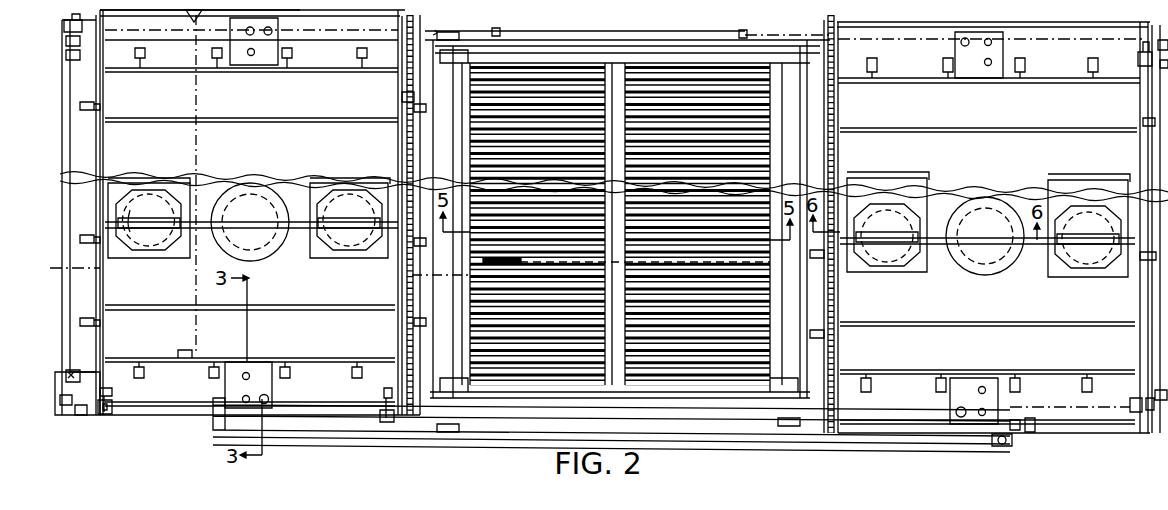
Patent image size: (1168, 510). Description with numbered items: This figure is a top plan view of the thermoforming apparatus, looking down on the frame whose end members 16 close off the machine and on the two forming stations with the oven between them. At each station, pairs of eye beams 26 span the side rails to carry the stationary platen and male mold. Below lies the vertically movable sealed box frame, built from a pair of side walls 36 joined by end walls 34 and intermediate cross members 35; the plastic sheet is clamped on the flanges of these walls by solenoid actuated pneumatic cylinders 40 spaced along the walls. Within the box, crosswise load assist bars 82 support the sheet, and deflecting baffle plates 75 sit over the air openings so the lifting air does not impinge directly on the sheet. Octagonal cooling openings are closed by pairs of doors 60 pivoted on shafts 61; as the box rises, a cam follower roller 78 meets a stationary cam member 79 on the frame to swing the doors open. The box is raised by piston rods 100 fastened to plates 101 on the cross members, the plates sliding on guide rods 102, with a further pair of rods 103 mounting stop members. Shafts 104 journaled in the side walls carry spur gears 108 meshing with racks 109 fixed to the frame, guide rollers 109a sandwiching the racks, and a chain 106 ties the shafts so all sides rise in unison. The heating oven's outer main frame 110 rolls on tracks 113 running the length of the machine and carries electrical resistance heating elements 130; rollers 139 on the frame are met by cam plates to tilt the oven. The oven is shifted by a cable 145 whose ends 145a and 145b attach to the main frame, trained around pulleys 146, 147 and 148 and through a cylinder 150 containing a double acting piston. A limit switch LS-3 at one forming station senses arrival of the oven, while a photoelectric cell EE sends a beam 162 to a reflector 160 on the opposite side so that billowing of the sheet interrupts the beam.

The end member 16 is at (62, 128).
The eye beam 26 is at (683, 92).
The end wall 34 is at (140, 13).
The intermediate wall cross member 35 is at (107, 72).
The side wall 36 is at (104, 140).
The pneumatic cylinder 40 is at (70, 238).
The door 60 is at (348, 210).
The shaft 61 is at (132, 230).
The deflecting baffle plate 75 is at (258, 256).
The cam follower roller 78 is at (72, 22).
The stationary cam member 79 is at (72, 40).
The load assist bar 82 is at (272, 123).
The piston rod 100 is at (248, 372).
The plate 101 is at (240, 60).
The guide rod 102 is at (268, 36).
The rod 103 is at (228, 400).
The shaft 104 is at (325, 37).
The chain 106 is at (250, 368).
The spur gear 108 is at (107, 412).
The rack 109 is at (118, 398).
The guide roller 109a is at (385, 386).
The outer main frame 110 is at (575, 40).
The track 113 is at (445, 40).
The electrical resistance heating element 130 is at (412, 275).
The roller 139 is at (72, 62).
The cable 145 is at (1080, 408).
The cable end 145a is at (743, 35).
The cable end 145b is at (497, 33).
The pulley 146 is at (1146, 62).
The pulley 147 is at (1030, 428).
The pulley 148 is at (1000, 442).
The cylinder 150 is at (685, 440).
The reflector 160 is at (182, 350).
The beam 162 is at (205, 145).
The photoelectric cell EE is at (180, 36).
The limit switch LS-3 is at (402, 97).